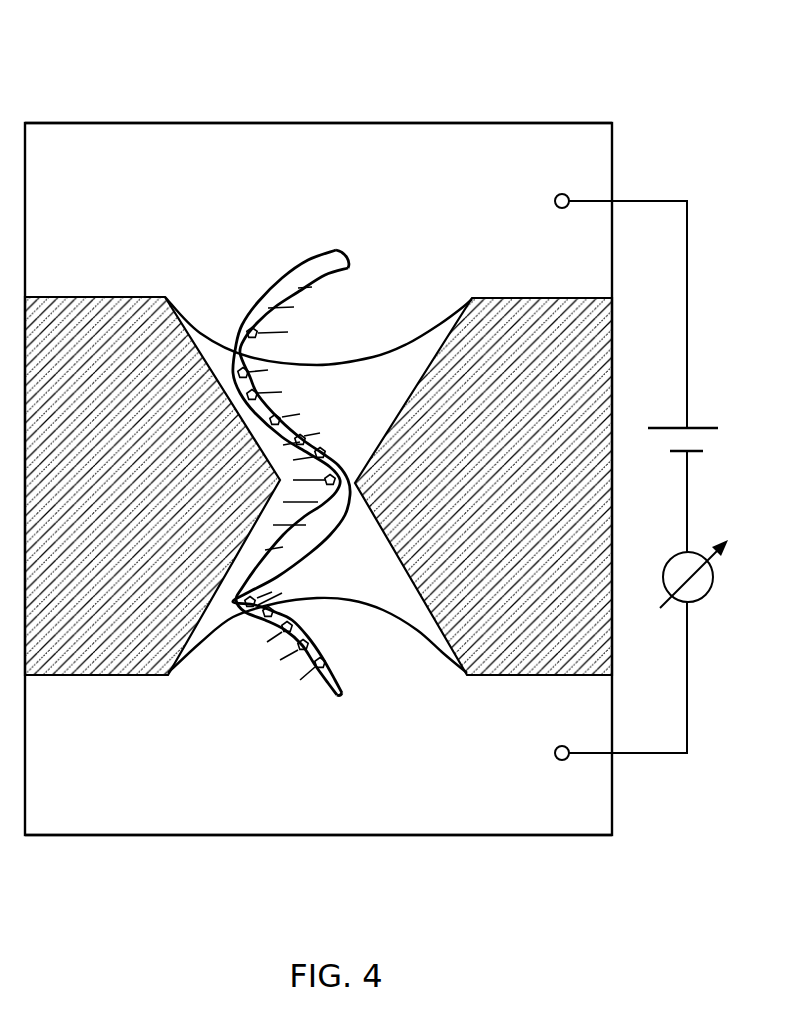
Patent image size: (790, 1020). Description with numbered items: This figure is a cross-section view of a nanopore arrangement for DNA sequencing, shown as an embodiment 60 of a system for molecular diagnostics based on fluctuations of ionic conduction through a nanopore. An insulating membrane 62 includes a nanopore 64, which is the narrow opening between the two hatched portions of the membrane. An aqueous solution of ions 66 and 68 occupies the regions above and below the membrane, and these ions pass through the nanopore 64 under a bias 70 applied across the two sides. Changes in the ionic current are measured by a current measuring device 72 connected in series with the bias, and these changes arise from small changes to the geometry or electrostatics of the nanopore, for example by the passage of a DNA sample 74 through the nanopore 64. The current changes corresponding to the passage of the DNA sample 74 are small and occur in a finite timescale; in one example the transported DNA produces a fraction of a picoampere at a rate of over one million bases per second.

The embodiment of a system for molecular diagnostics 60 is at (558, 62).
The insulating membrane 62 is at (88, 313).
The nanopore 64 is at (318, 485).
The aqueous solution of ions 66 is at (318, 144).
The aqueous solution of ions 68 is at (318, 812).
The bias 70 is at (680, 438).
The current measuring device 72 is at (680, 568).
The DNA sample 74 is at (313, 270).